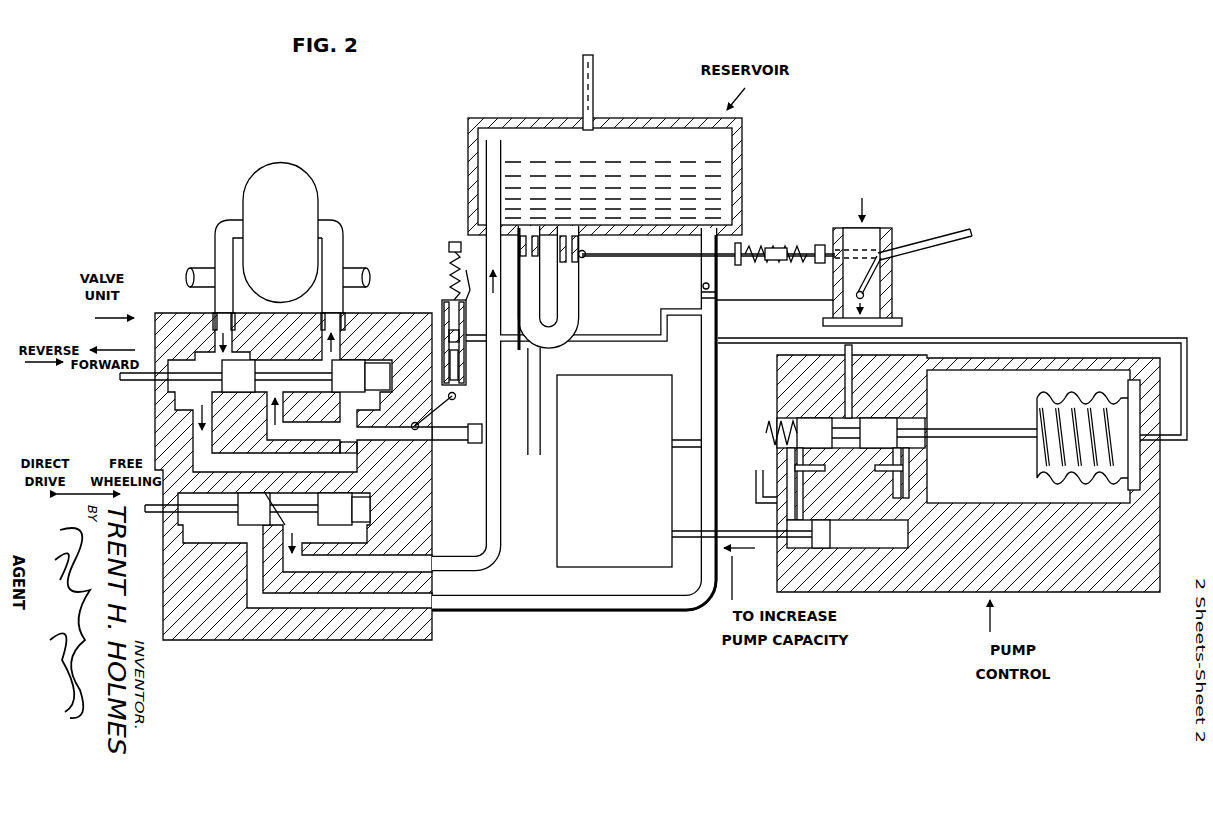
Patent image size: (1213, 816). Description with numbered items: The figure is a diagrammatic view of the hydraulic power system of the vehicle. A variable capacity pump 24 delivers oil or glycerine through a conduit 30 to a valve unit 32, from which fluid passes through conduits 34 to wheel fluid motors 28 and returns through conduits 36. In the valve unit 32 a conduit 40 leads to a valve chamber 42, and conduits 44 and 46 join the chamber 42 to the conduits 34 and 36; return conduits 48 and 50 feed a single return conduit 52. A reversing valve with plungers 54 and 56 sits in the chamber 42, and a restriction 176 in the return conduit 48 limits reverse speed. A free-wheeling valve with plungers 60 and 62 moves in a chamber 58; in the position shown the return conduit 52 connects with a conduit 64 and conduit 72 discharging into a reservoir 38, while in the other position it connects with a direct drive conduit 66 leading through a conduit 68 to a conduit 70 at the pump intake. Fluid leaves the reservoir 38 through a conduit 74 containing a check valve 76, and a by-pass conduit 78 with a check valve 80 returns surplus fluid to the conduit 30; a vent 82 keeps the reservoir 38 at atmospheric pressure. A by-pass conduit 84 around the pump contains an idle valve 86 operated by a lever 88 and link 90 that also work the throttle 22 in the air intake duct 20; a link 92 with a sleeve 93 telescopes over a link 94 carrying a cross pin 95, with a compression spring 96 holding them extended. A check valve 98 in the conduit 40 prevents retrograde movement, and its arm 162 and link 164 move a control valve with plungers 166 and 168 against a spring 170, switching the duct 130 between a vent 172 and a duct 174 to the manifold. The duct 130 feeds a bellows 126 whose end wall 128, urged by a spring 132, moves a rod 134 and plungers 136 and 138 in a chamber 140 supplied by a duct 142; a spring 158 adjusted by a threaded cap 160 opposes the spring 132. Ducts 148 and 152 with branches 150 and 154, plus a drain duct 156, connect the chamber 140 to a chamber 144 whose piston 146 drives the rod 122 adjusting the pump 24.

The air intake duct 20 is at (930, 217).
The throttle 22 is at (858, 291).
The variable capacity pump 24 is at (572, 520).
The fluid motor 28 is at (293, 172).
The conduit 30 is at (457, 444).
The valve unit 32 is at (378, 640).
The conduit 34 is at (344, 258).
The conduit 36 is at (214, 258).
The reservoir 38 is at (743, 157).
The conduit 40 is at (400, 472).
The valve chamber 42 is at (292, 352).
The conduit 44 is at (340, 347).
The conduit 46 is at (218, 342).
The return conduit 48 is at (338, 412).
The return conduit 50 is at (200, 443).
The return conduit 52 is at (262, 490).
The plunger 54 is at (358, 386).
The plunger 56 is at (248, 386).
The chamber 58 is at (291, 495).
The plunger 60 is at (326, 519).
The plunger 62 is at (245, 519).
The conduit 64 is at (432, 560).
The direct drive conduit 66 is at (278, 600).
The conduit 68 is at (614, 608).
The conduit 70 is at (684, 450).
The conduit 72 is at (499, 490).
The conduit 74 is at (716, 372).
The check valve 76 is at (717, 302).
The conduit 78 is at (540, 369).
The check valve 80 is at (548, 288).
The vent 82 is at (583, 77).
The conduit 84 is at (576, 293).
The idle valve 86 is at (580, 270).
The lever 88 is at (890, 259).
The link 90 is at (942, 247).
The link 92 is at (836, 232).
The sleeve 93 is at (786, 247).
The link 94 is at (674, 257).
The cross pin 95 is at (781, 262).
The compression spring 96 is at (750, 246).
The check valve 98 is at (456, 418).
The rod 122 is at (780, 538).
The bellows 126 is at (1075, 478).
The end wall 128 is at (1040, 452).
The duct 130 is at (1187, 395).
The spring 132 is at (1102, 406).
The rod 134 is at (978, 434).
The plunger 136 is at (885, 425).
The plunger 138 is at (810, 425).
The chamber 140 is at (820, 415).
The duct 142 is at (853, 360).
The chamber 144 is at (895, 549).
The piston 146 is at (820, 549).
The duct 148 is at (910, 490).
The branch 150 is at (900, 473).
The duct 152 is at (792, 506).
The branch 154 is at (790, 470).
The drain duct 156 is at (773, 484).
The spring 158 is at (766, 435).
The threaded cap 160 is at (775, 424).
The arm 162 is at (455, 400).
The link 164 is at (457, 384).
The plunger 166 is at (443, 320).
The plunger 168 is at (446, 305).
The spring 170 is at (450, 270).
The vent 172 is at (472, 276).
The duct 174 is at (672, 332).
The restriction 176 is at (432, 462).